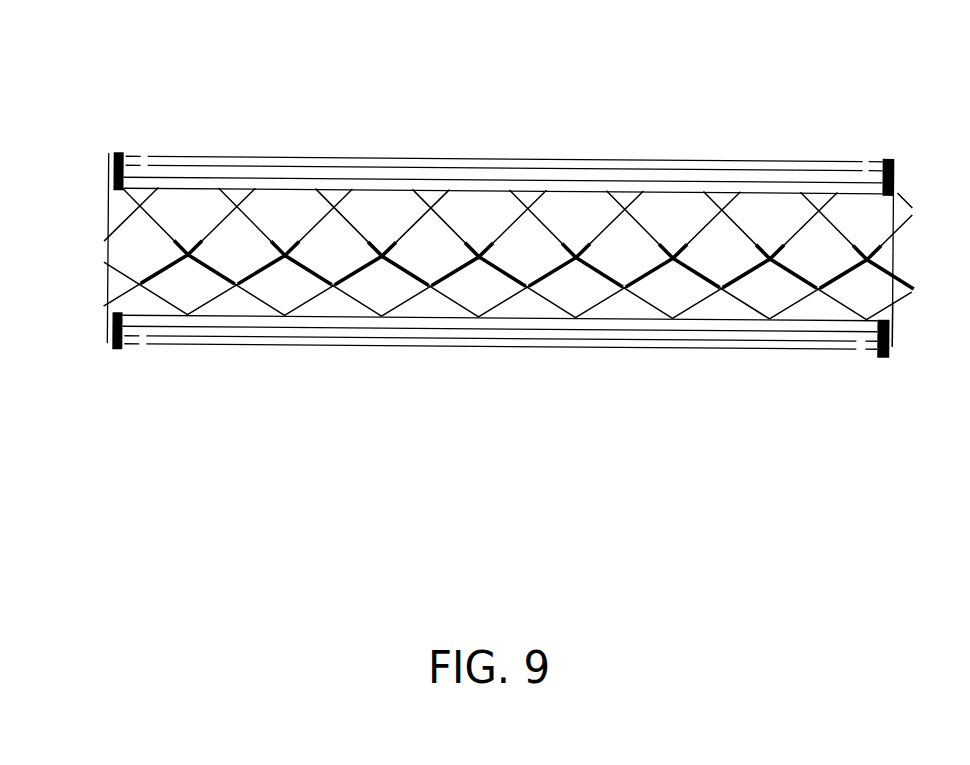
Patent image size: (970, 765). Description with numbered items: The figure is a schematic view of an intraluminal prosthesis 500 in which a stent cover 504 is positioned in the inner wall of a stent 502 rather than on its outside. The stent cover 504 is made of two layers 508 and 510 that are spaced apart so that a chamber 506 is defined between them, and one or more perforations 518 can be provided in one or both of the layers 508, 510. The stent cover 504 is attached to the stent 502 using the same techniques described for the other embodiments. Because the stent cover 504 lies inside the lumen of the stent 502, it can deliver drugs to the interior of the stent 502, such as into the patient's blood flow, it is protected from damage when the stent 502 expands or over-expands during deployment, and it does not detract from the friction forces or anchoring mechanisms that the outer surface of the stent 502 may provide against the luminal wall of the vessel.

The prosthesis 500 is at (537, 306).
The stent 502 is at (650, 268).
The stent cover 504 is at (921, 320).
The chamber 506 is at (335, 174).
The layer 508 is at (613, 185).
The layer 510 is at (192, 162).
The perforations 518 is at (143, 150).